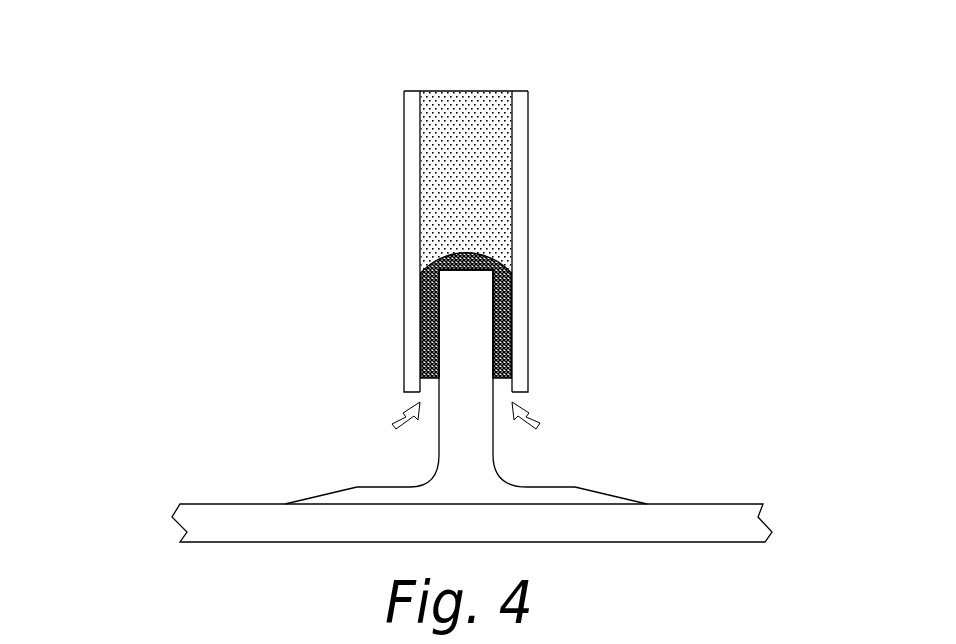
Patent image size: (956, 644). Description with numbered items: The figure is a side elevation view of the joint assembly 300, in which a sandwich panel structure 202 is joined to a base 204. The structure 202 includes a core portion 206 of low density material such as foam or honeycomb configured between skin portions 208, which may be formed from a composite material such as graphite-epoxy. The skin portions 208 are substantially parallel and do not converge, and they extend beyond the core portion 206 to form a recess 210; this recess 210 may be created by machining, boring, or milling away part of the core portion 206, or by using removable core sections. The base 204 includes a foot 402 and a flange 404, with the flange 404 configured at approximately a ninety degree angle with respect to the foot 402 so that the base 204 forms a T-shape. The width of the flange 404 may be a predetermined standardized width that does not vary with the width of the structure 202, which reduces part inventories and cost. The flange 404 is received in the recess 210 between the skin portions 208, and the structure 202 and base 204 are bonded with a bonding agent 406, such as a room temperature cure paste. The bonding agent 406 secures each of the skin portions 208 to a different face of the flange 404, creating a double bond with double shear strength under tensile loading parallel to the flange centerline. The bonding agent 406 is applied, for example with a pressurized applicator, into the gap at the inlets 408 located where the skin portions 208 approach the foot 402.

The joint assembly 300 is at (137, 36).
The structure 202 is at (575, 94).
The base 204 is at (626, 461).
The core portion 206 is at (457, 91).
The skin portions 208 is at (404, 148).
The recess 210 is at (408, 358).
The foot 402 is at (758, 204).
The flange 404 is at (500, 330).
The bonding agent 406 is at (414, 299).
The inlets 408 is at (392, 424).